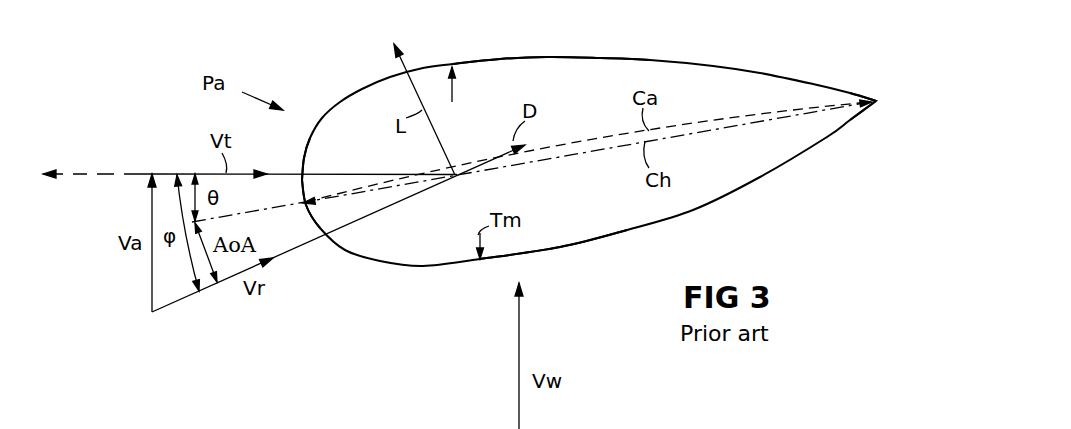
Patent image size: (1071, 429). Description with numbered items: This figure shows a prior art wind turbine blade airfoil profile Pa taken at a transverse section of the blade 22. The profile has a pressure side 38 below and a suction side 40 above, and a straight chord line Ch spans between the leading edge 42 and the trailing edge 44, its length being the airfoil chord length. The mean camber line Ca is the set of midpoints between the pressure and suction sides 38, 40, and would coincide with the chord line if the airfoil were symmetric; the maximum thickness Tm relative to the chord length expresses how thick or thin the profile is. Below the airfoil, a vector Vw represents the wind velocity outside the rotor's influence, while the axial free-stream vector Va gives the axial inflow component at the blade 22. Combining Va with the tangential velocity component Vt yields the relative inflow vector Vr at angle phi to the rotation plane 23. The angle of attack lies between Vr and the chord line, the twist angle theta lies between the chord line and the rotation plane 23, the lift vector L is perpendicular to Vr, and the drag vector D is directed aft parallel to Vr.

The blade 22 is at (585, 198).
The rotation plane 23 is at (109, 173).
The pressure side 38 is at (574, 241).
The suction side 40 is at (547, 57).
The leading edge 42 is at (301, 204).
The trailing edge 44 is at (879, 99).